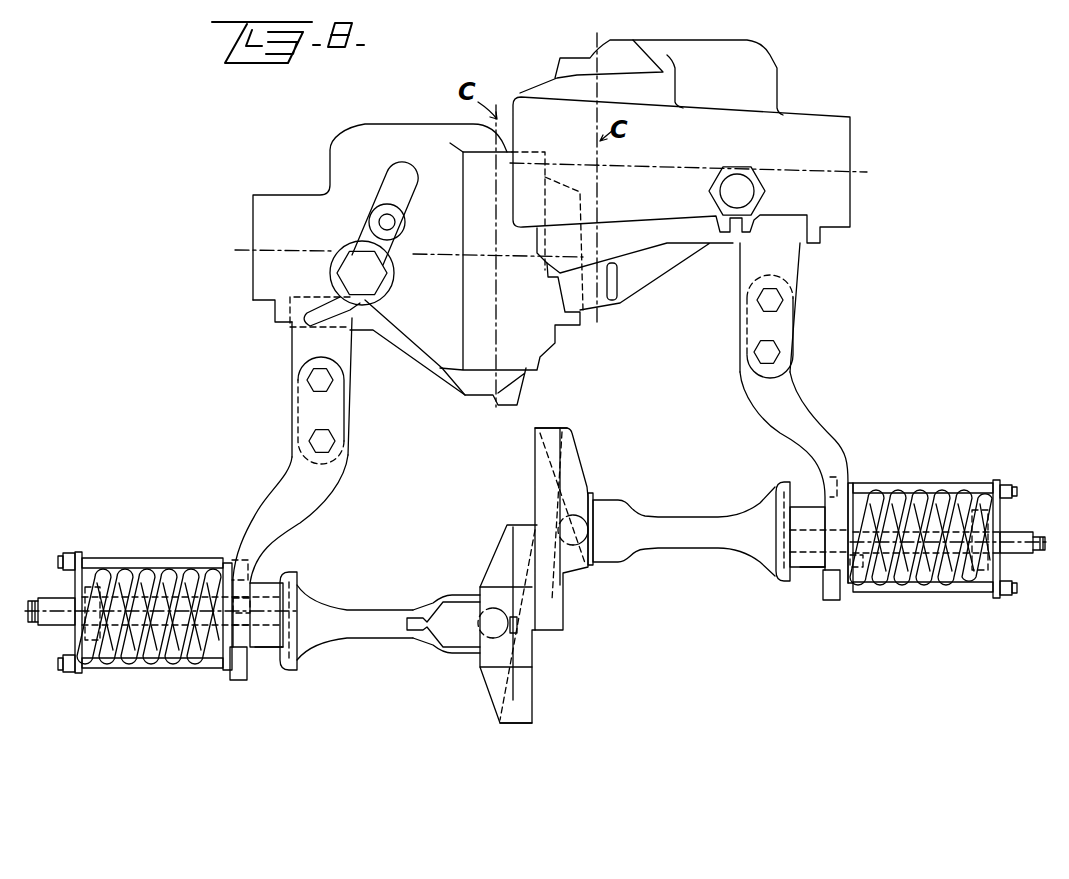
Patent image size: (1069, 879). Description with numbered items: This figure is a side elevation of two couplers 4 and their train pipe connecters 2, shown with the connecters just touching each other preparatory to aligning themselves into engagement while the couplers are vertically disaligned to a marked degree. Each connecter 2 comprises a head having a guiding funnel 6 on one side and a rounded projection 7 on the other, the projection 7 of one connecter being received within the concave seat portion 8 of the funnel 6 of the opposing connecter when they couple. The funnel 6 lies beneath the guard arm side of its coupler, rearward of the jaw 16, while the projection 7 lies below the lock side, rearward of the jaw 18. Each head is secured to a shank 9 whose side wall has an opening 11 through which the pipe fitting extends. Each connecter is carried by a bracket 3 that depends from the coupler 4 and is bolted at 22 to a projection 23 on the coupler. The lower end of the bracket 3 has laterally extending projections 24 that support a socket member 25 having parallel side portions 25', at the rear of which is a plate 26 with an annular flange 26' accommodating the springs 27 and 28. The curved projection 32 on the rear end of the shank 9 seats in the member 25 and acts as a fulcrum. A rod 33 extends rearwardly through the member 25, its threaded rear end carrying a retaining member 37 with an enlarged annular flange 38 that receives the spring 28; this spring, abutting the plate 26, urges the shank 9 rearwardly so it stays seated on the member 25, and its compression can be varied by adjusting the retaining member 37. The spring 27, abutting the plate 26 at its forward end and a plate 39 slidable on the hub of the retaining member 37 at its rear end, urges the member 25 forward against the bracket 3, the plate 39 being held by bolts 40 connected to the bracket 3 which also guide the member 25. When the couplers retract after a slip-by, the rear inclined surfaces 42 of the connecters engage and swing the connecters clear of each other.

The connecter 2 is at (595, 465).
The bracket 3 is at (256, 513).
The coupler 4 is at (551, 220).
The guiding funnel 6 is at (535, 462).
The rounded projection 7 is at (510, 633).
The concave seat portion 8 is at (586, 533).
The head supporting member or shank 9 is at (352, 612).
The opening 11 is at (453, 640).
The jaw 16 is at (523, 211).
The jaw 18 is at (586, 274).
The bolt 22 is at (328, 443).
The projection 23 is at (300, 346).
The laterally extending projection 24 is at (234, 665).
The member 25 is at (540, 556).
The parallel side portion 25' is at (540, 630).
The plate 26 is at (545, 556).
The annular flange 26' is at (566, 591).
The spring 27 is at (118, 578).
The spring 28 is at (174, 597).
The curved projection 32 is at (291, 588).
The rod 33 is at (30, 609).
The retaining member 37 is at (52, 616).
The enlarged annular flange 38 is at (91, 648).
The plate 39 is at (79, 556).
The bolt 40 is at (100, 562).
The rear inclined surface 42 is at (507, 647).